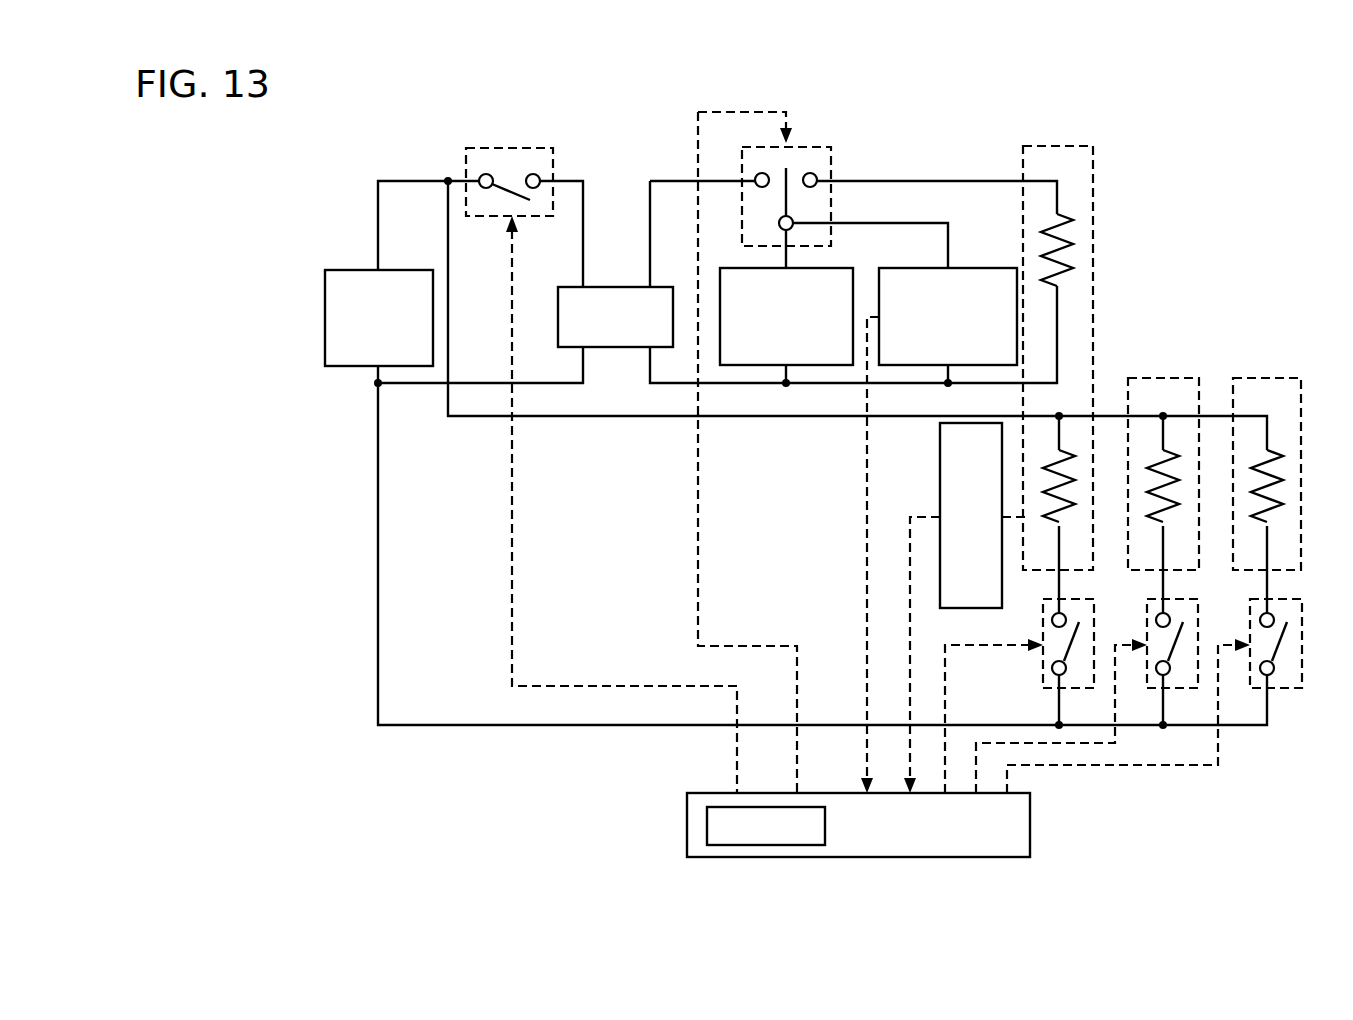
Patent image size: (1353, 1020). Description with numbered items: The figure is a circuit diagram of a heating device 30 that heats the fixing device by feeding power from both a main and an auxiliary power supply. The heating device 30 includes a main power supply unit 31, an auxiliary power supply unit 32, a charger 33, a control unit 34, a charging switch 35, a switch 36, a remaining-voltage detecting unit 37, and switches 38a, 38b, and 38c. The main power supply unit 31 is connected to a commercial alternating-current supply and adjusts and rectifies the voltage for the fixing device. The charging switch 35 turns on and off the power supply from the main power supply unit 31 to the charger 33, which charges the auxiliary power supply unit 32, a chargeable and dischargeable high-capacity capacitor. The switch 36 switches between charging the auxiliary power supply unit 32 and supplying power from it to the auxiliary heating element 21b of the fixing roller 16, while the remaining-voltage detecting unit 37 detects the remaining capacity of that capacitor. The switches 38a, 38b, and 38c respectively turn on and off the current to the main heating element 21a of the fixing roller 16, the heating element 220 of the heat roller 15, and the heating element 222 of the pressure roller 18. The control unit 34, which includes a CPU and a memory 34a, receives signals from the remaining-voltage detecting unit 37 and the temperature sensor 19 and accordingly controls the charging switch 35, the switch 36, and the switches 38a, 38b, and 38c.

The heating device 30 is at (375, 118).
The main power supply unit 31 is at (355, 270).
The auxiliary power supply unit 32 is at (736, 268).
The charger 33 is at (572, 287).
The control unit 34 is at (687, 808).
The memory 34a is at (707, 826).
The charging switch 35 is at (492, 148).
The switch 36 is at (812, 147).
The remaining-voltage detecting unit 37 is at (984, 268).
The fixing roller 16 is at (1060, 146).
The heat roller 15 is at (1165, 378).
The pressure roller 18 is at (1270, 378).
The temperature sensor 19 is at (940, 468).
The main heating element 21a is at (1053, 527).
The auxiliary heating element 21b is at (1073, 237).
The heating element 220 is at (1157, 527).
The heating element 222 is at (1261, 527).
The switch 38a is at (1043, 676).
The switch 38b is at (1177, 690).
The switch 38c is at (1280, 690).